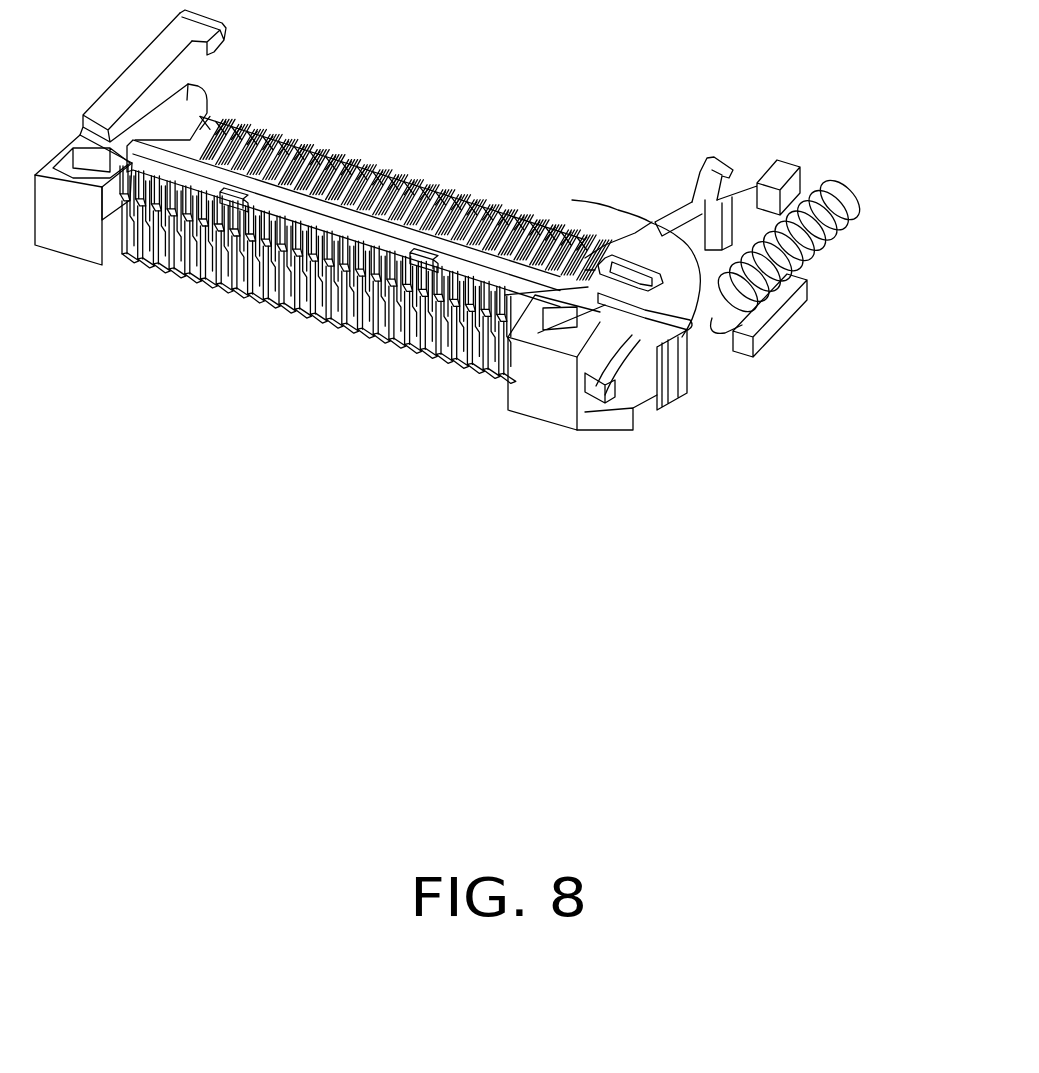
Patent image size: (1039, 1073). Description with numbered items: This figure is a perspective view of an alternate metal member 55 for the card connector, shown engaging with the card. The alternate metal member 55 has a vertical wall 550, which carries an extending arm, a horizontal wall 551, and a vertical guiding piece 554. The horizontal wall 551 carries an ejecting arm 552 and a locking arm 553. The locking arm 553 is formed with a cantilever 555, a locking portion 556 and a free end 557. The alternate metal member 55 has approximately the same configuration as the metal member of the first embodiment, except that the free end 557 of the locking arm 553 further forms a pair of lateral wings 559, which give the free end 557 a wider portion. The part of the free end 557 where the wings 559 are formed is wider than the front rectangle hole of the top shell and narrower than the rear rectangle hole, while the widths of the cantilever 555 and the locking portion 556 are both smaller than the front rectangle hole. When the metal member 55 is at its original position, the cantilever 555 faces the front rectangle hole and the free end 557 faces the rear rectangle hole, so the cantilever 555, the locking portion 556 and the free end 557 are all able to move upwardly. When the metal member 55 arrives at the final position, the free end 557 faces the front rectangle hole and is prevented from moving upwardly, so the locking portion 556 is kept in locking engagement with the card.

The alternate metal member 55 is at (698, 360).
The vertical wall 550 is at (713, 348).
The horizontal wall 551 is at (720, 287).
The ejecting arm 552 is at (373, 347).
The locking arm 553 is at (800, 193).
The vertical guiding piece 554 is at (498, 372).
The cantilever 555 is at (655, 223).
The locking portion 556 is at (692, 203).
The free end 557 is at (717, 167).
The lateral wings 559 is at (747, 167).